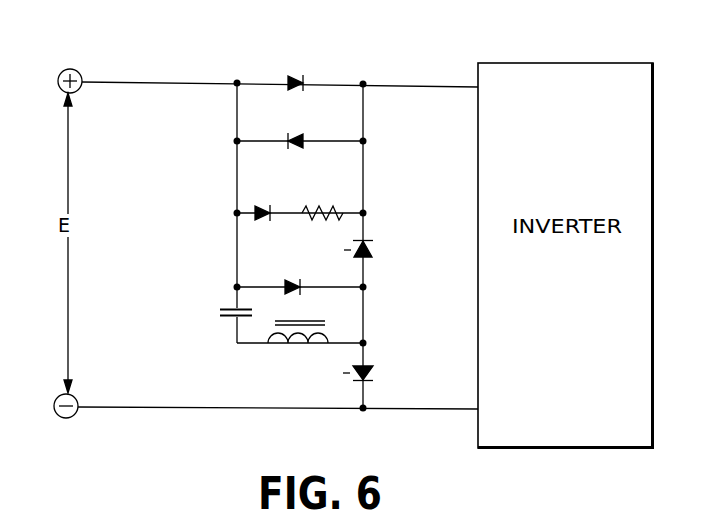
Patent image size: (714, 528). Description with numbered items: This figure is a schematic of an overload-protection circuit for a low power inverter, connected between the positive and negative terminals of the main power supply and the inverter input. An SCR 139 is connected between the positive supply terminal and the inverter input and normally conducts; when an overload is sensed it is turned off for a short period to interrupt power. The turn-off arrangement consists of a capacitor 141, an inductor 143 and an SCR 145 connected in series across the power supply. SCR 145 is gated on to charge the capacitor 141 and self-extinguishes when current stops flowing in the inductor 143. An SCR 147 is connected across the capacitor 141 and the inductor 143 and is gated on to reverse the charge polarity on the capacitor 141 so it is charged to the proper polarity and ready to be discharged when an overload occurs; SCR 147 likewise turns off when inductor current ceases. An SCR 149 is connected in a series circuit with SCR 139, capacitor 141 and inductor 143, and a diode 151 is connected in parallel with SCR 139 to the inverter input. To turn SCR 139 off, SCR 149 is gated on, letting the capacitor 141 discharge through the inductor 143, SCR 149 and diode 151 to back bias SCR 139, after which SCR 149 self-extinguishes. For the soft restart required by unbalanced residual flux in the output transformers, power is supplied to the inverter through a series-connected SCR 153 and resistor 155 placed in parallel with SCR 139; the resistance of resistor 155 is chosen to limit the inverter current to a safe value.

The SCR 139 is at (298, 75).
The diode 151 is at (294, 131).
The SCR 153 is at (258, 205).
The resistor 155 is at (320, 205).
The SCR 147 is at (295, 275).
The SCR 149 is at (376, 251).
The capacitor 141 is at (222, 320).
The inductor 143 is at (290, 356).
The SCR 145 is at (374, 375).